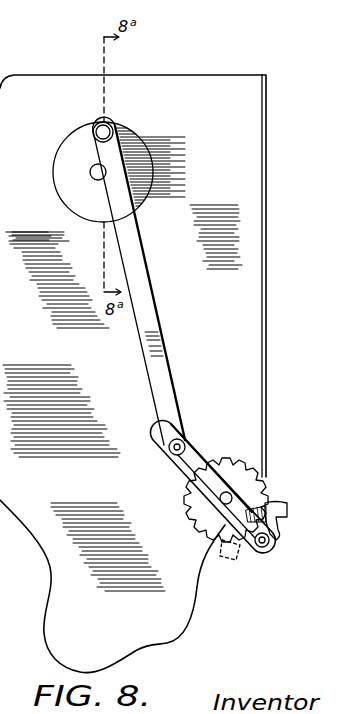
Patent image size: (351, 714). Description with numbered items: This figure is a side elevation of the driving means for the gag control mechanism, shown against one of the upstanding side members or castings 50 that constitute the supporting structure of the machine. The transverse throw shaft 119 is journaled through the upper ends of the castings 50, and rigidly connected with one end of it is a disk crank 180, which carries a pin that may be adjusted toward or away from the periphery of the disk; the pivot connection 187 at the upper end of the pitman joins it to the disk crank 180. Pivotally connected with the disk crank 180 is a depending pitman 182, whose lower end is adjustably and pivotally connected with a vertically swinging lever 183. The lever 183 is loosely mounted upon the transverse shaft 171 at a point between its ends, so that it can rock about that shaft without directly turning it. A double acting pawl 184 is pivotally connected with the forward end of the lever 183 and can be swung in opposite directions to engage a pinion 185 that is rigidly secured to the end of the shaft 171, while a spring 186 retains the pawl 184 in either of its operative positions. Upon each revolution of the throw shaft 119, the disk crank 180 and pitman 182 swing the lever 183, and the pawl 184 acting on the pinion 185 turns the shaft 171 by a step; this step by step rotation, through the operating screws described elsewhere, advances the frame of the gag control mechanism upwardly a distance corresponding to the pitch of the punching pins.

The side member or casting 50 is at (250, 190).
The throw shaft 119 is at (92, 178).
The transverse shaft 171 is at (228, 465).
The disk crank 180 is at (145, 165).
The pitman 182 is at (148, 301).
The vertically swinging lever 183 is at (190, 490).
The double acting pawl 184 is at (277, 503).
The pinion 185 is at (203, 519).
The spring 186 is at (256, 507).
The pivot pin 187 is at (108, 123).